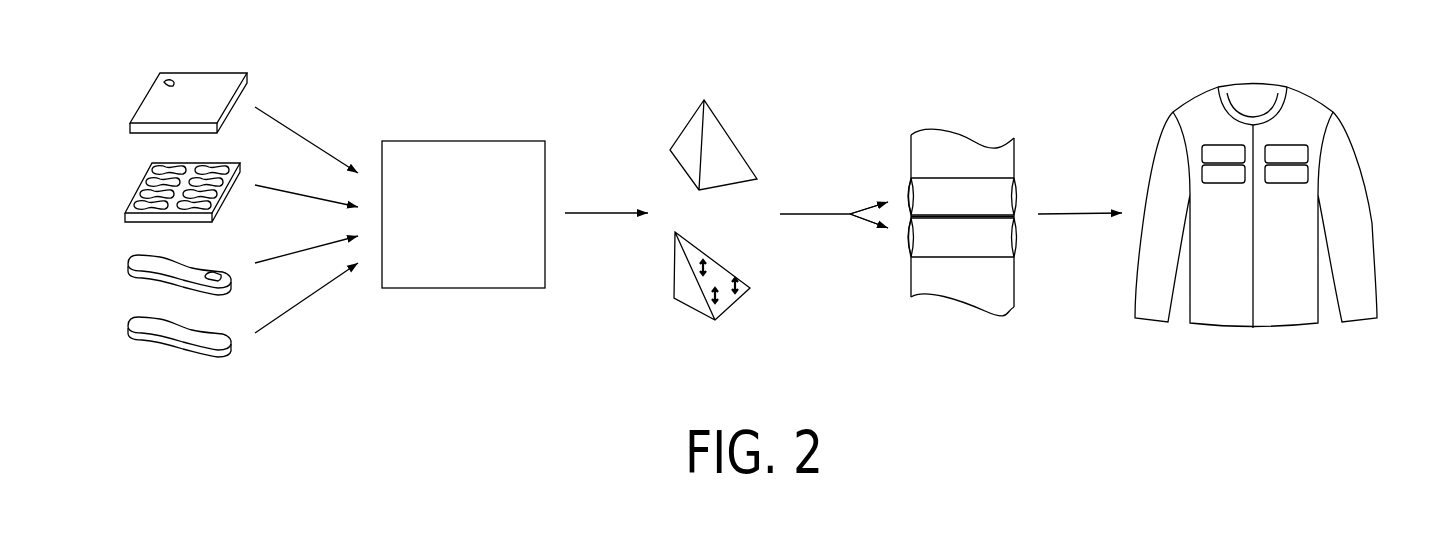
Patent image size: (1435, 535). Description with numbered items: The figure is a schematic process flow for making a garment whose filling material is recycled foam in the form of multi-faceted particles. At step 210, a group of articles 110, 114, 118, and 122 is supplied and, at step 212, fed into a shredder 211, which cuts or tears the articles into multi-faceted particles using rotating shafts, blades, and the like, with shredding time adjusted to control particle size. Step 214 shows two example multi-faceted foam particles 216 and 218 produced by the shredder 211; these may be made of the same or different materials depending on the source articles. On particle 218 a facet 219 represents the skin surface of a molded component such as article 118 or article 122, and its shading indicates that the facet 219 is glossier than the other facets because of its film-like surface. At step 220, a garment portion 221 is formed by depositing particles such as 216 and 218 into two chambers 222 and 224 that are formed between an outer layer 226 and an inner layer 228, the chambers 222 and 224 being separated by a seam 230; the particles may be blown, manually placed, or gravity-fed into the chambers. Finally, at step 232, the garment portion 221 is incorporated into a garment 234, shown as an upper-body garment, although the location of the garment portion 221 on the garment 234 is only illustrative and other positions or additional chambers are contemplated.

The article 110 is at (150, 89).
The article 114 is at (142, 179).
The article 118 is at (132, 253).
The article 122 is at (132, 315).
The step 210 is at (205, 409).
The shredder 211 is at (503, 140).
The step 212 is at (487, 337).
The step 214 is at (738, 389).
The multi-faceted foam particle 216 is at (685, 175).
The multi-faceted foam particle 218 is at (695, 310).
The facet 219 is at (720, 277).
The step 220 is at (988, 366).
The garment portion 221 is at (940, 103).
The chamber 222 is at (1015, 188).
The chamber 224 is at (1015, 247).
The outer layer 226 is at (987, 208).
The inner layer 228 is at (910, 188).
The seam 230 is at (1017, 215).
The step 232 is at (1278, 378).
The garment 234 is at (1270, 55).